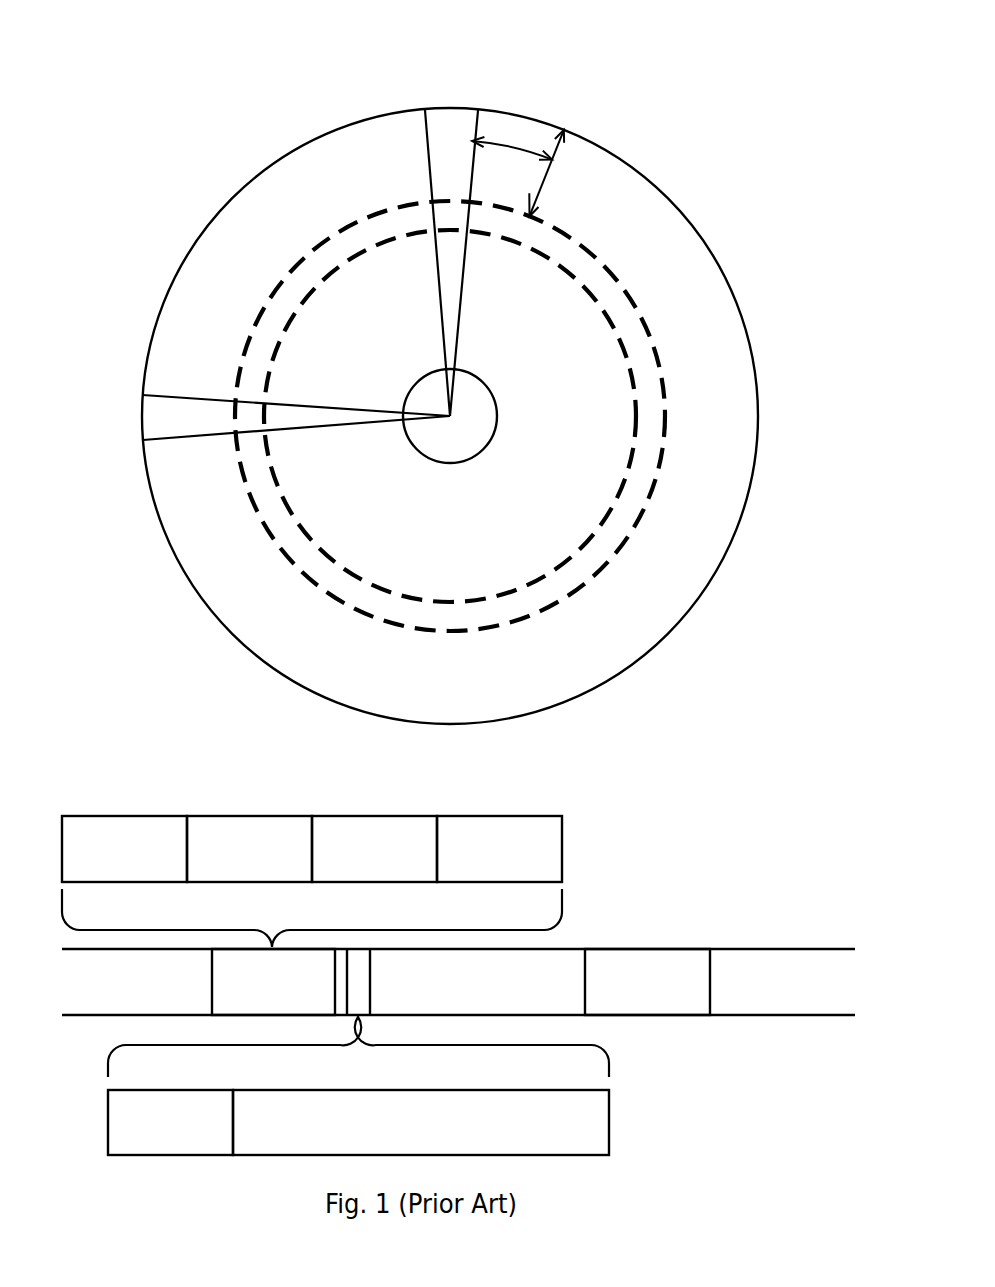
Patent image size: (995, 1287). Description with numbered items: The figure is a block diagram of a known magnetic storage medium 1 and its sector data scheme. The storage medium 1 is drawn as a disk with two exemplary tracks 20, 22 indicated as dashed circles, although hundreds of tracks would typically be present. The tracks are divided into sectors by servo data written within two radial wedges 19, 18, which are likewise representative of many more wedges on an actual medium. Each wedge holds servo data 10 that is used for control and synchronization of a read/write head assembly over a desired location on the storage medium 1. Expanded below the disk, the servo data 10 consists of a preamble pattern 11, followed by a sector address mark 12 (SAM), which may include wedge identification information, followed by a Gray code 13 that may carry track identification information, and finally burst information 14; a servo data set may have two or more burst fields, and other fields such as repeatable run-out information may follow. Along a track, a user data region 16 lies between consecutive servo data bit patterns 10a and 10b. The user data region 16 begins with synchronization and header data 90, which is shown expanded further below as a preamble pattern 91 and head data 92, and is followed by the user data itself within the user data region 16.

The storage medium 1 is at (428, 369).
The wedge 18 is at (449, 113).
The wedge 19 is at (151, 420).
The track 20 is at (602, 305).
The track 22 is at (588, 253).
The servo data 10 is at (312, 847).
The preamble pattern 11 is at (124, 849).
The sector address mark 12 is at (249, 849).
The Gray code 13 is at (374, 849).
The burst information 14 is at (499, 849).
The user data region 16 is at (458, 955).
The servo data bit pattern 10a is at (273, 982).
The servo data bit pattern 10b is at (647, 982).
The header data 90 is at (399, 1086).
The preamble pattern 91 is at (170, 1122).
The head data 92 is at (421, 1122).